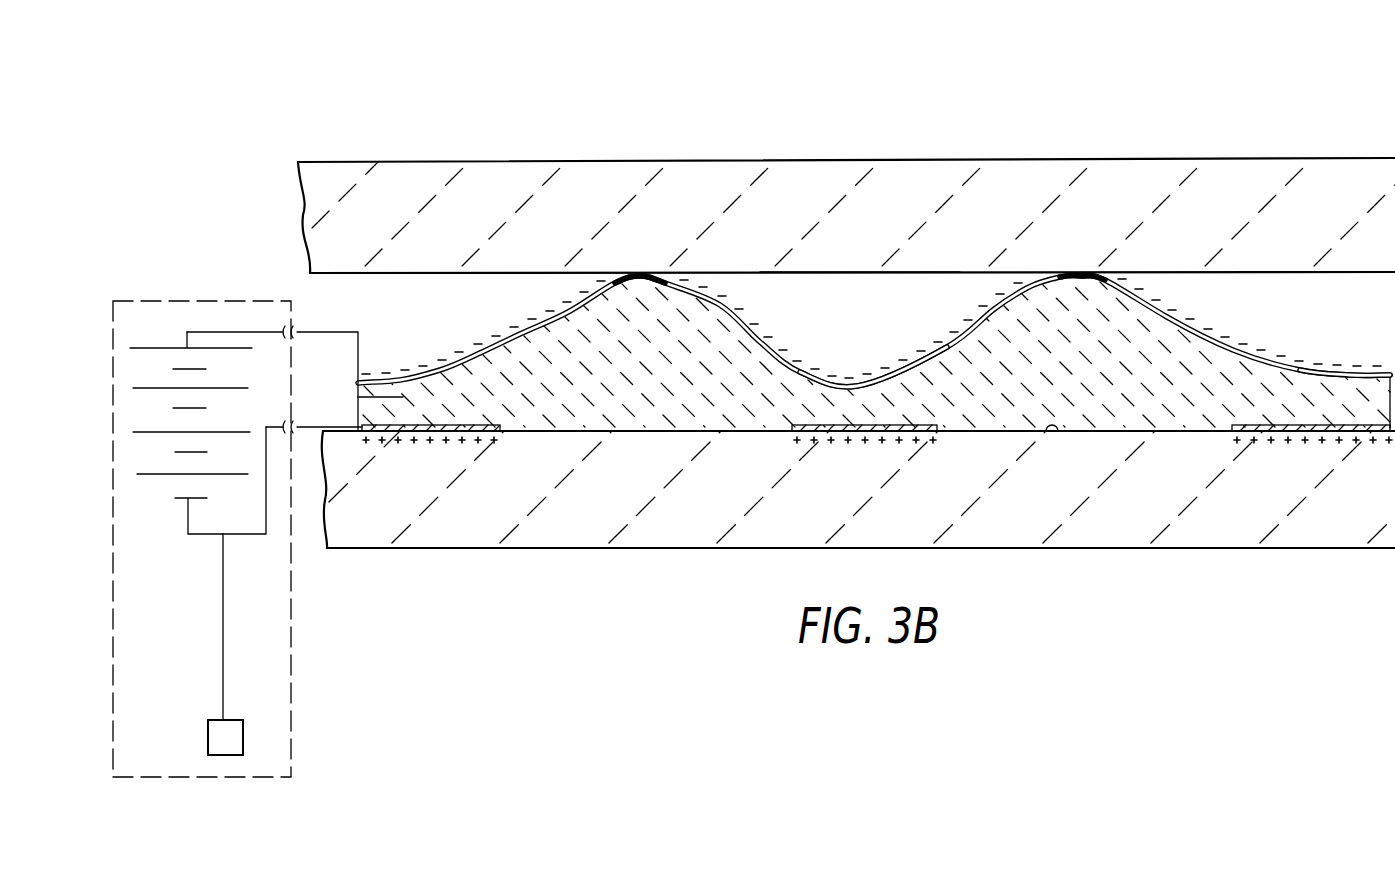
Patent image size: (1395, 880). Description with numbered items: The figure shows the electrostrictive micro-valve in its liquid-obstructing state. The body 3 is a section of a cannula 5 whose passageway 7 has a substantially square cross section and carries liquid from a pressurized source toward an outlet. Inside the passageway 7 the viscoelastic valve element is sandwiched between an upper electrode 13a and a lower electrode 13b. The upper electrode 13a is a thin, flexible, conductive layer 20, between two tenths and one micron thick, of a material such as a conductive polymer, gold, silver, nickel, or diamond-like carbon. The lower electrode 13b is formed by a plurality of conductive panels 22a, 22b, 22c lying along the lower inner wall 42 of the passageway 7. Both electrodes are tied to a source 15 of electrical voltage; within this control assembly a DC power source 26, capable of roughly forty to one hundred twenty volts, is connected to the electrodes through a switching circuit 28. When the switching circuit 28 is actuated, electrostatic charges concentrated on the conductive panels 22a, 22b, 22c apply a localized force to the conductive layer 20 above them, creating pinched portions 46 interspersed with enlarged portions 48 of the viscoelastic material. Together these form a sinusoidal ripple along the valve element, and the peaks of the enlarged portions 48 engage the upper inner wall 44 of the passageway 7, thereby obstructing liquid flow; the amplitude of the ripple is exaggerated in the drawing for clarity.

The body 3 is at (643, 157).
The cannula 5 is at (367, 118).
The passageway 7 is at (846, 342).
The upper electrode 13a is at (412, 368).
The lower electrode 13b is at (400, 436).
The source of electrical voltage 15 is at (202, 511).
The flexible, conductive layer 20 is at (495, 346).
The conductive panel 22a is at (450, 433).
The conductive panel 22b is at (842, 433).
The conductive panel 22c is at (1293, 432).
The DC power source 26 is at (152, 477).
The switching circuit 28 is at (243, 720).
The lower inner wall 42 is at (1058, 427).
The upper inner wall 44 is at (867, 275).
The pinched portions 46 is at (372, 396).
The enlarged portions 48 is at (638, 288).